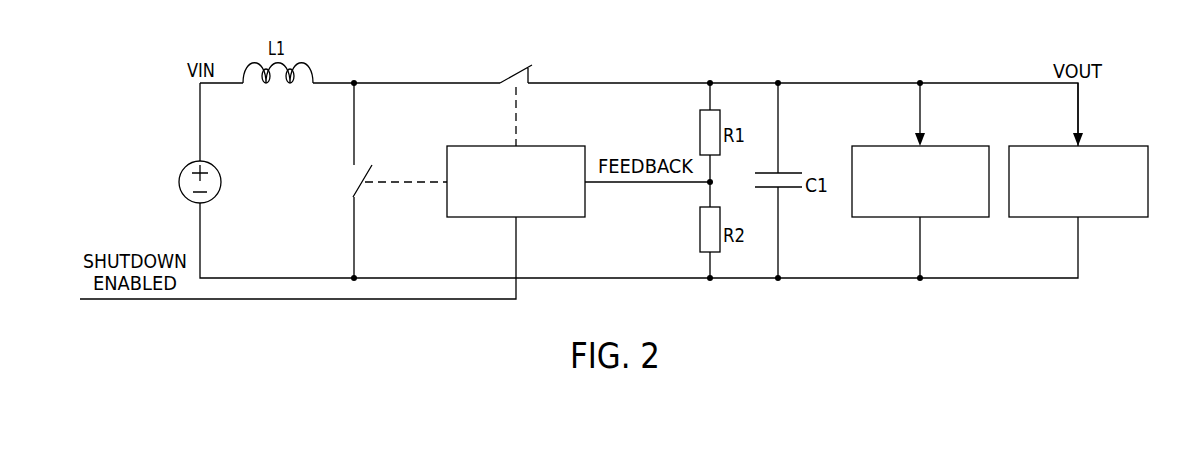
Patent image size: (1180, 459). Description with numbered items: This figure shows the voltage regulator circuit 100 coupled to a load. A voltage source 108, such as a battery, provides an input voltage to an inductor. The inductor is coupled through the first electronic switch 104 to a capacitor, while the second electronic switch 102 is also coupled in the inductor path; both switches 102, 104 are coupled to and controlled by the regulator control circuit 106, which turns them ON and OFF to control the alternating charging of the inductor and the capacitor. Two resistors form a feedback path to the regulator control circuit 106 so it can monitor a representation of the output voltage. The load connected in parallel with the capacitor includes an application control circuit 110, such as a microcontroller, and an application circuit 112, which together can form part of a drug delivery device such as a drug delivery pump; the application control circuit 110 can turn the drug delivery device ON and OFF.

The voltage regulator circuit 100 is at (160, 26).
The first electronic switch 102 is at (352, 194).
The second electronic switch 104 is at (522, 66).
The regulator control circuit 106 is at (538, 146).
The voltage source 108 is at (179, 182).
The application control circuit 110 is at (940, 146).
The application circuit 112 is at (1098, 146).